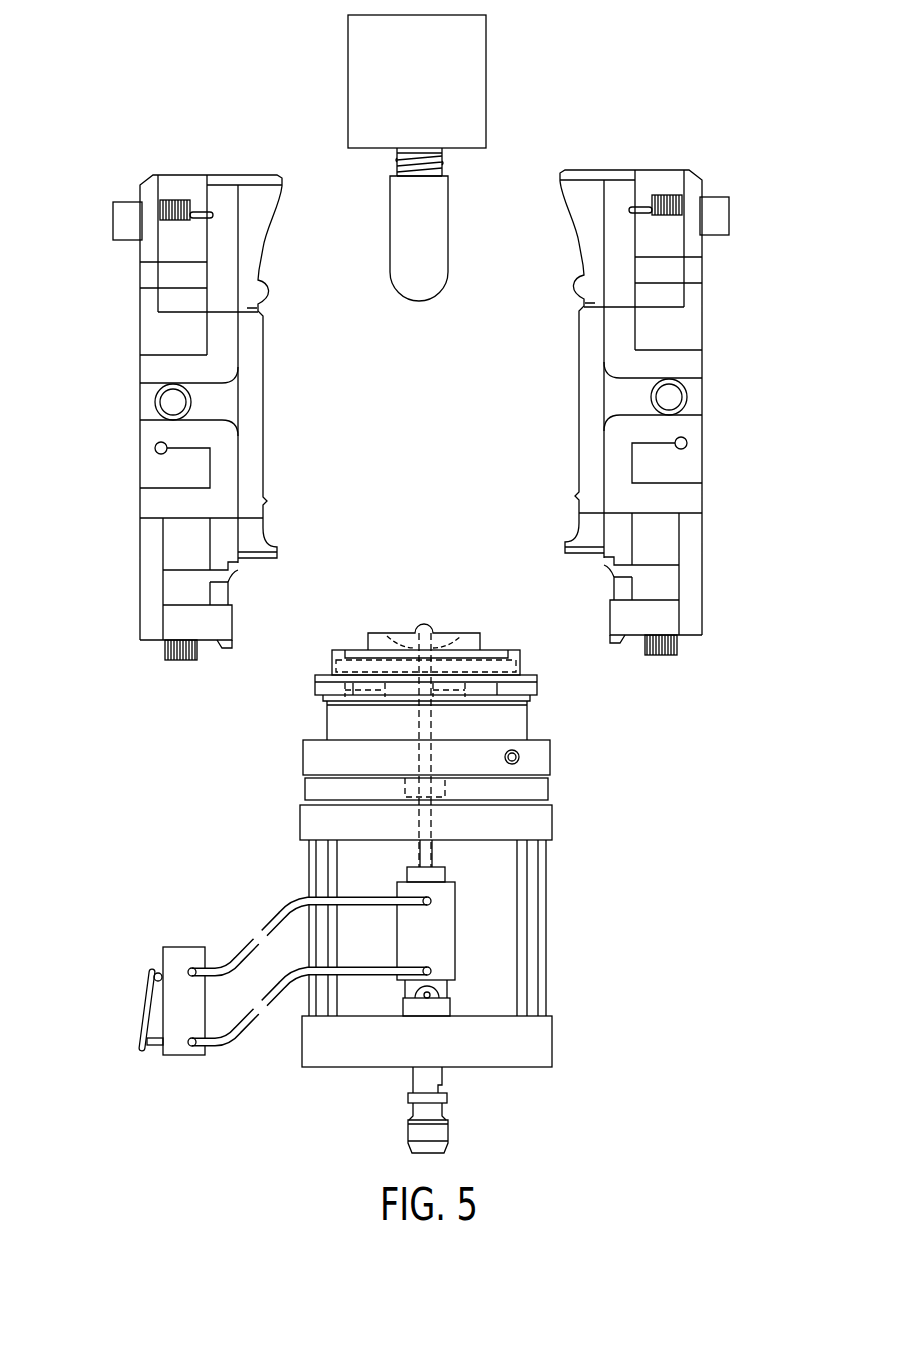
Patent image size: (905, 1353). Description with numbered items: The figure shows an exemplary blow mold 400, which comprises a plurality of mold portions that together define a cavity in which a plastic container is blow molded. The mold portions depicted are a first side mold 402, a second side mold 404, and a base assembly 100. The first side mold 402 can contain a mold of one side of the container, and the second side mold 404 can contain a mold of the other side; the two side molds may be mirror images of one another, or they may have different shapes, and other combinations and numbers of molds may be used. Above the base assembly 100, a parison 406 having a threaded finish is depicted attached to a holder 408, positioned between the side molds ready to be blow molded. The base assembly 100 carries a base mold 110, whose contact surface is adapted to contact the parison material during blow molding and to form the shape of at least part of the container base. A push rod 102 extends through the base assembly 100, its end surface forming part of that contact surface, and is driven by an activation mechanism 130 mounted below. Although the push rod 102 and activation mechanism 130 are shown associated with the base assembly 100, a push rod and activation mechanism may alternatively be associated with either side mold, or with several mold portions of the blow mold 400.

The blow mold 400 is at (423, 584).
The holder 408 is at (475, 117).
The parison 406 is at (432, 237).
The first side mold 402 is at (149, 435).
The second side mold 404 is at (697, 428).
The base assembly 100 is at (373, 885).
The base mold 110 is at (470, 645).
The push rod 102 is at (418, 715).
The activation mechanism 130 is at (488, 931).